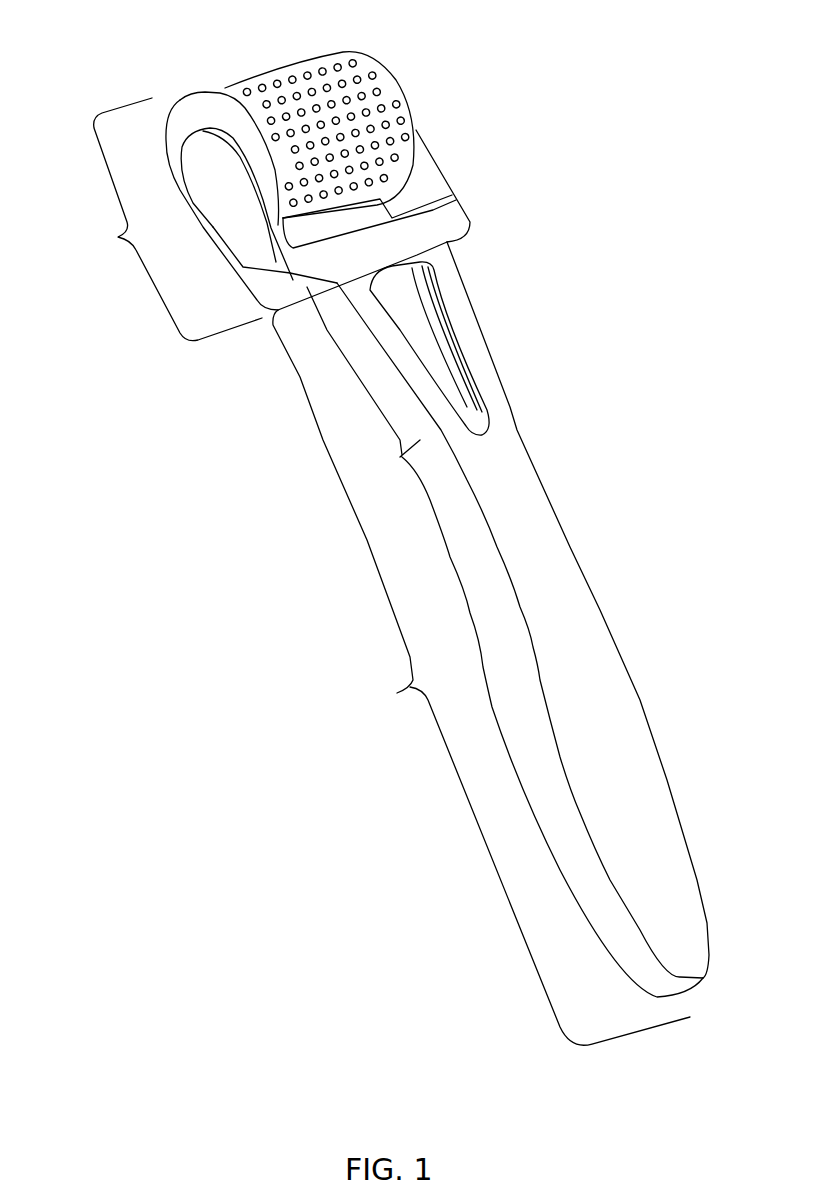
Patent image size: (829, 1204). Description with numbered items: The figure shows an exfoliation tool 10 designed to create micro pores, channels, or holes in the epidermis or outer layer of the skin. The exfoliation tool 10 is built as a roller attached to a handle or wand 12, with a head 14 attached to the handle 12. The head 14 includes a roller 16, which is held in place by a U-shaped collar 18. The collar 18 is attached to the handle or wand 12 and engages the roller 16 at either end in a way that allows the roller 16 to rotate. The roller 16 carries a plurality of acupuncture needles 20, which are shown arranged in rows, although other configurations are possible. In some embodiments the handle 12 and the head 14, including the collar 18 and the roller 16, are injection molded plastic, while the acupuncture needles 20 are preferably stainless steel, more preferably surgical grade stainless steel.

The exfoliation tool 10 is at (597, 370).
The handle or wand 12 is at (491, 643).
The head 14 is at (173, 219).
The roller 16 is at (180, 100).
The U-shaped collar 18 is at (447, 233).
The acupuncture needles 20 is at (370, 70).